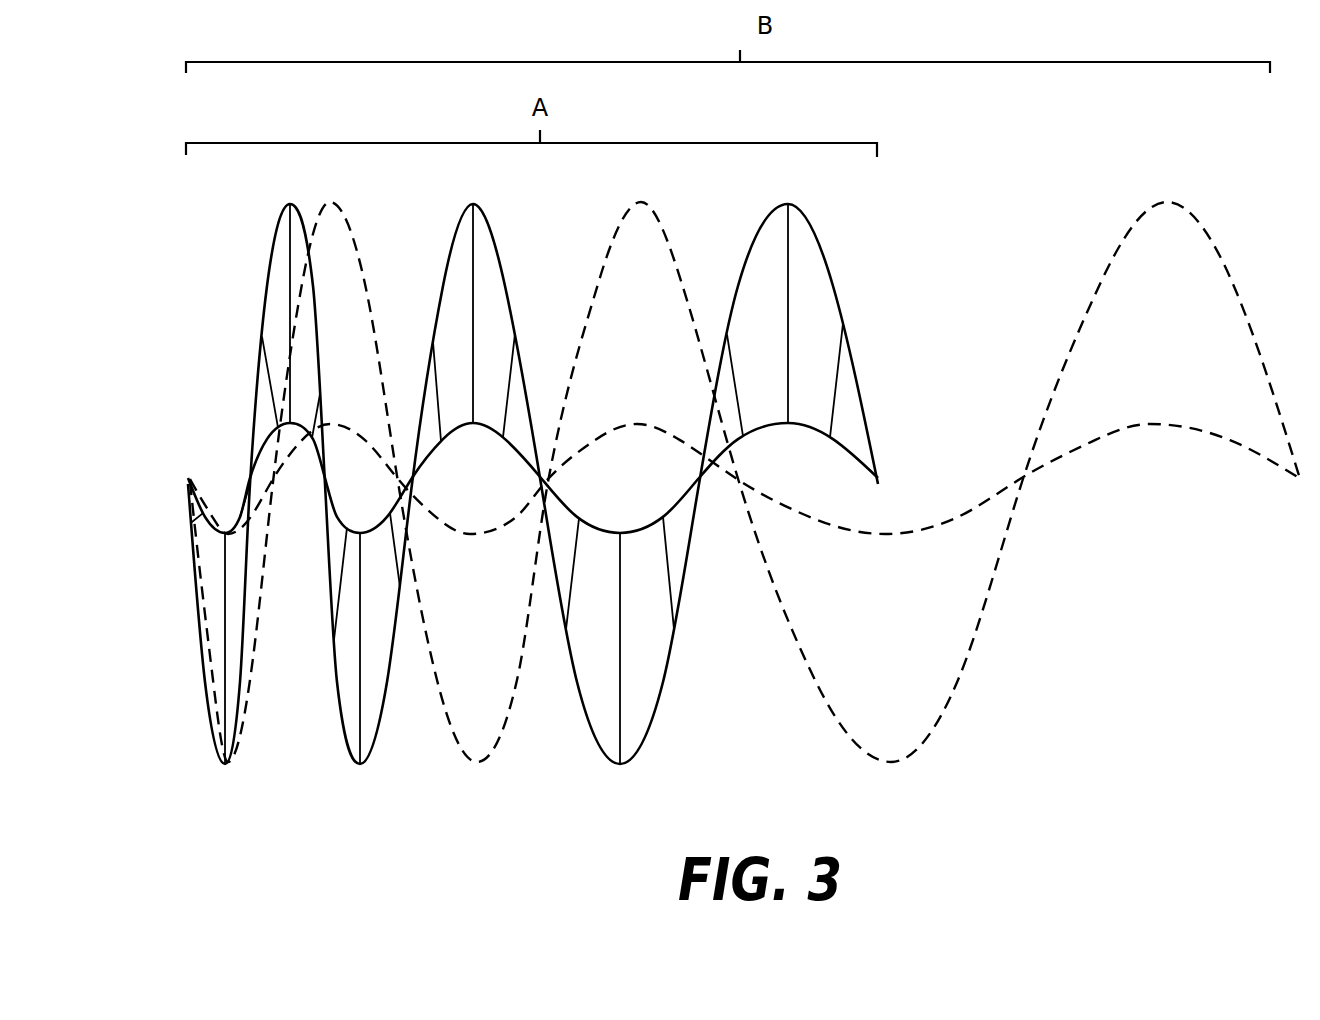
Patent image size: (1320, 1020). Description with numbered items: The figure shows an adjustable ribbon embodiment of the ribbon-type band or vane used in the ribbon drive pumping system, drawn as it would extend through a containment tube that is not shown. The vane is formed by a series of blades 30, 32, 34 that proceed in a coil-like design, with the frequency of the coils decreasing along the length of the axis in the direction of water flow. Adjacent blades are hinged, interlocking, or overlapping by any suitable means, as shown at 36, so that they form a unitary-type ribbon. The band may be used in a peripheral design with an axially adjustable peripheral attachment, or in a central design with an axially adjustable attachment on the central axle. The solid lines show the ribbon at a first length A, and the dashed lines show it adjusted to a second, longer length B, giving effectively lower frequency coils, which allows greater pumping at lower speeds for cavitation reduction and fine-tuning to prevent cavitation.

The blade 30 is at (855, 408).
The blade 32 is at (823, 327).
The blade 34 is at (760, 246).
The hinged, interlocking, or overlapping joint 36 is at (791, 252).